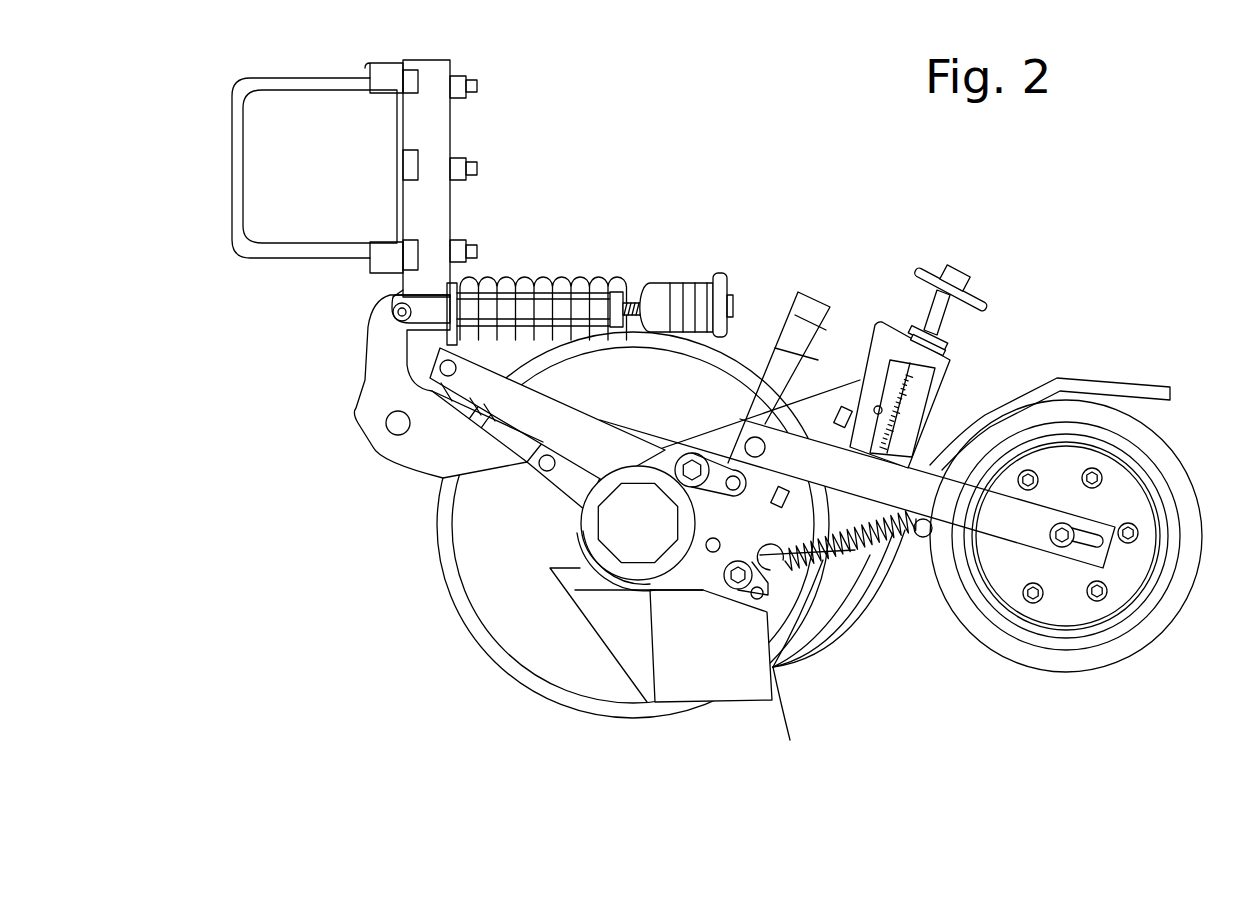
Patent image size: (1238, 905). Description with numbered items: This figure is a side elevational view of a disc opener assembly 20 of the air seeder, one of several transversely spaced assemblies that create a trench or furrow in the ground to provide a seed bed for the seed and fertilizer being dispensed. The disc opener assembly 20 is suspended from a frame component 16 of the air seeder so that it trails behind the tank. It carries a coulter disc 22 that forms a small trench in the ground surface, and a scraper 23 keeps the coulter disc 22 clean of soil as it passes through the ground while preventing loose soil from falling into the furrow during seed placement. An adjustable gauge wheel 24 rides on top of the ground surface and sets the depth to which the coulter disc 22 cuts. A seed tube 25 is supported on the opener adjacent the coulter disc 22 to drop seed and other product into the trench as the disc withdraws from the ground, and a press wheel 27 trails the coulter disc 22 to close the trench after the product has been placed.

The frame component 16 is at (433, 125).
The disc opener assembly 20 is at (1032, 235).
The coulter disc 22 is at (500, 627).
The scraper 23 is at (740, 686).
The gauge wheel 24 is at (830, 645).
The seed tube 25 is at (813, 298).
The press wheel 27 is at (1000, 652).